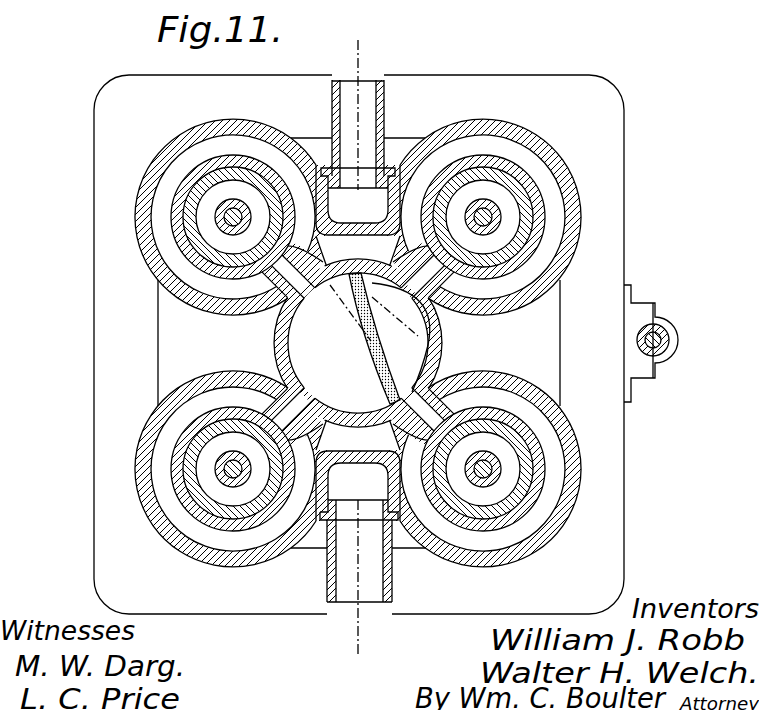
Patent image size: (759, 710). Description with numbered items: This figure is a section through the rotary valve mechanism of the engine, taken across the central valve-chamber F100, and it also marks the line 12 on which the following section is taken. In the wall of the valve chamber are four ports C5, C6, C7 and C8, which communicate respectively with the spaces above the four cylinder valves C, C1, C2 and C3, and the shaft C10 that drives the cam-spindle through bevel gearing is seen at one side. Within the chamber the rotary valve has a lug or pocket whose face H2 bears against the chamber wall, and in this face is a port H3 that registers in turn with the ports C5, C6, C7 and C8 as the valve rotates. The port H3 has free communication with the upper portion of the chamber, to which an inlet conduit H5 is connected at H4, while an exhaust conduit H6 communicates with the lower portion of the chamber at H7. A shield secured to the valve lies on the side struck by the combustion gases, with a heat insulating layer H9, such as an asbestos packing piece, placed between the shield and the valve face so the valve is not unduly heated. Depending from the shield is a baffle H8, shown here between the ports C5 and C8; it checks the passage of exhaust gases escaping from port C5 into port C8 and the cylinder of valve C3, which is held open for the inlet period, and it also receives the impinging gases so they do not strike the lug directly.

The valve C is at (218, 492).
The valve C1 is at (203, 210).
The valve C2 is at (508, 211).
The valve C3 is at (507, 470).
The port C5 is at (204, 432).
The port C6 is at (316, 288).
The port C7 is at (420, 268).
The port C8 is at (452, 512).
The shaft C10 is at (663, 338).
The face of lug H2 is at (437, 365).
The port H3 is at (432, 316).
The inlet communication H4 is at (382, 194).
The inlet conduit H5 is at (335, 104).
The exhaust conduit H6 is at (368, 592).
The exhaust communication H7 is at (318, 428).
The baffle H8 is at (388, 375).
The heat insulating layer H9 is at (362, 337).
The section line 12- 12 is at (365, 67).
The central valve-chamber F100 is at (256, 517).